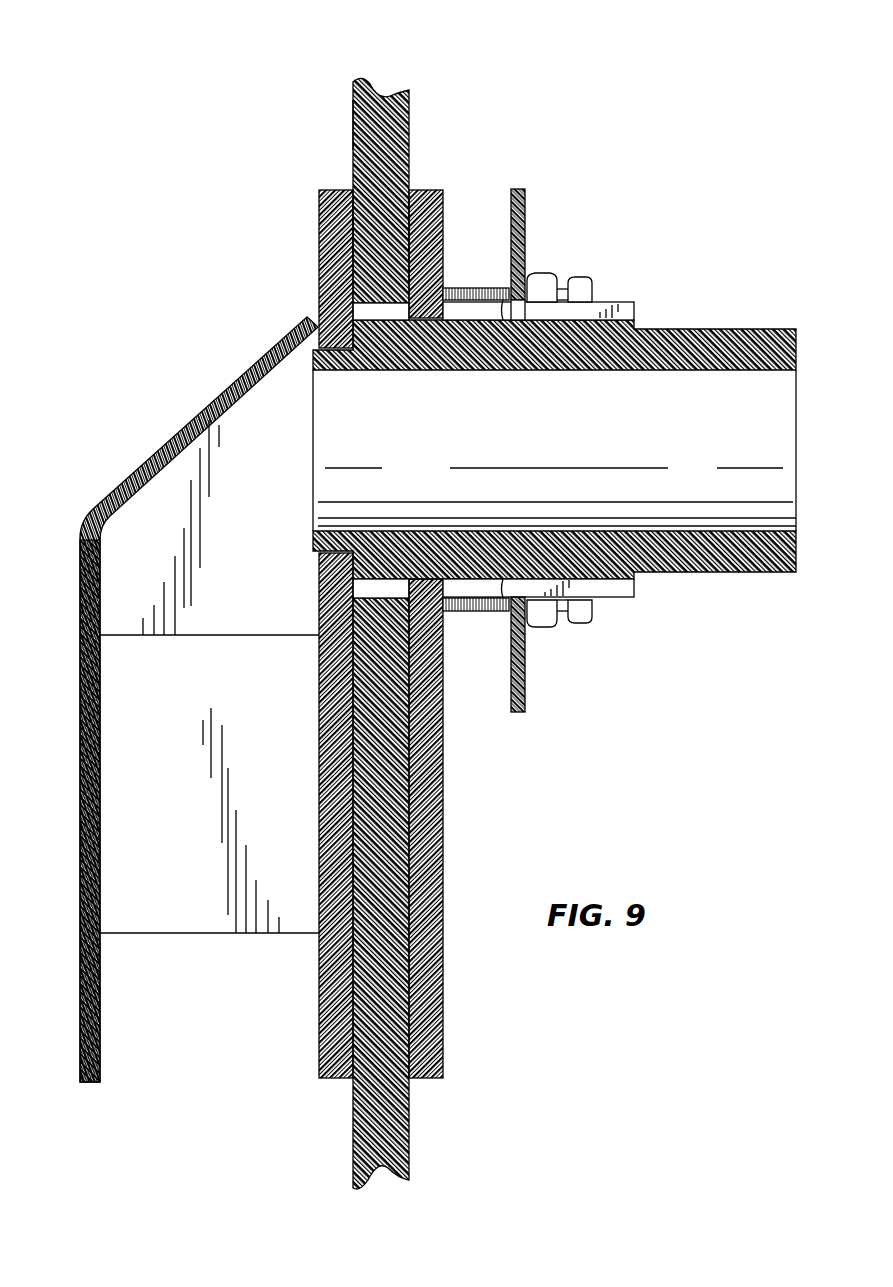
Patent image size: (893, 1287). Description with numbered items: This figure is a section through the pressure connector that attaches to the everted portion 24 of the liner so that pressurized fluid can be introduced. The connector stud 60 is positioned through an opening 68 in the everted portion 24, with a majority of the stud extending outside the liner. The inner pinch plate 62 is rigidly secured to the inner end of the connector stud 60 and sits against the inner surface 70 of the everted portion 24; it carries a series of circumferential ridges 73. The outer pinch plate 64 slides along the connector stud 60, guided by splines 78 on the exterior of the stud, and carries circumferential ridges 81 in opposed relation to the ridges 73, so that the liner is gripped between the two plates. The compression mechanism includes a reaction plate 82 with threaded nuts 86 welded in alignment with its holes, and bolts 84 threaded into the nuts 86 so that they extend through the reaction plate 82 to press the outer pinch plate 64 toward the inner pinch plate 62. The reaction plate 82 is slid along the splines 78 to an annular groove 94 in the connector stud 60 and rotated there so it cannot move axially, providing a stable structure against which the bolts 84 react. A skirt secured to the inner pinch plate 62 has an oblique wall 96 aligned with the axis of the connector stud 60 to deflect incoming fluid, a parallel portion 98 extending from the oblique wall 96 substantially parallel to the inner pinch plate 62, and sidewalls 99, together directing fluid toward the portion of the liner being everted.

The everted portion 24 is at (410, 100).
The inner surface 70 is at (342, 124).
The circumferential ridges 73 is at (355, 226).
The circumferential ridges 81 is at (405, 255).
The opening 68 is at (375, 310).
The connector stud 60 is at (718, 328).
The inner pinch plate 62 is at (333, 1082).
The outer pinch plate 64 is at (423, 1082).
The reaction plate 82 is at (527, 203).
The threaded nuts 86 is at (545, 272).
The bolts 84 is at (583, 277).
The splines 78 is at (618, 598).
The annular groove 94 is at (505, 598).
The oblique wall 96 is at (178, 427).
The parallel portion 98 is at (80, 835).
The sidewalls 99 is at (214, 873).